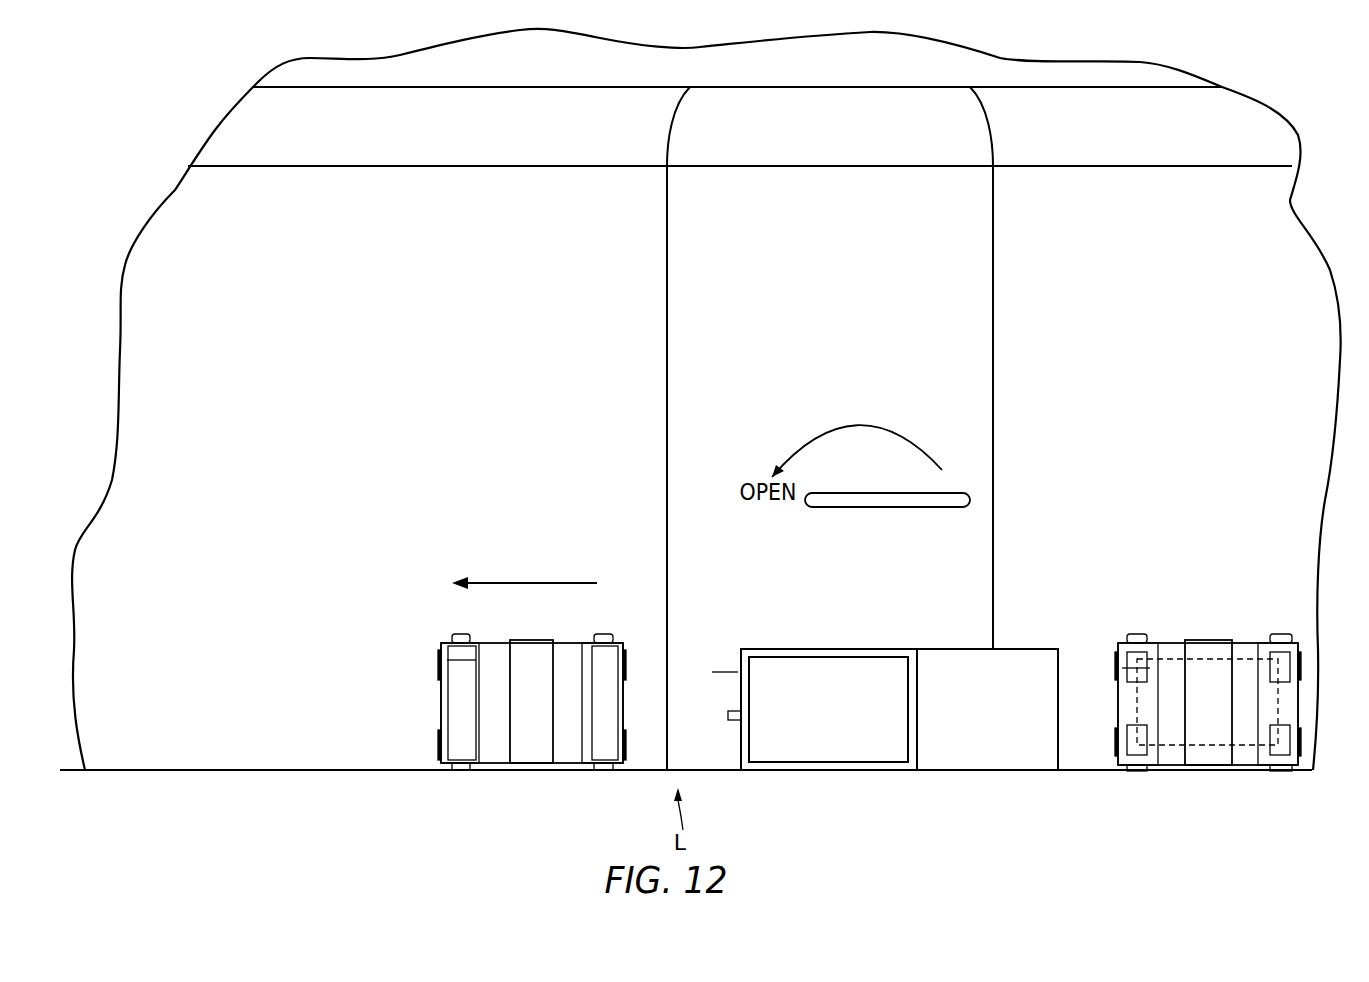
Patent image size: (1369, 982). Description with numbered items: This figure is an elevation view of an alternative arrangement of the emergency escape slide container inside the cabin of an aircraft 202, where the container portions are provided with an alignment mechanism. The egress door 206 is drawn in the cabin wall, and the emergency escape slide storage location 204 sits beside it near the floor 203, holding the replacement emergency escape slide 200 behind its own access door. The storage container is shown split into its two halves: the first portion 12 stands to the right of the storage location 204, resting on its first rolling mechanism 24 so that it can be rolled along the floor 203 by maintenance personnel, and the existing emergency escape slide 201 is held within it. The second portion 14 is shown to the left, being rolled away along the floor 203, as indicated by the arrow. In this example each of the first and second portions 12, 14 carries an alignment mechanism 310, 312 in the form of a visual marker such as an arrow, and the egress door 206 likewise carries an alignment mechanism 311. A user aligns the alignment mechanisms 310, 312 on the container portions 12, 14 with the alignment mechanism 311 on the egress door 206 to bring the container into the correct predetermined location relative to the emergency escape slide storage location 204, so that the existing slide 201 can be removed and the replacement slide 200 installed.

The aircraft 202 is at (258, 72).
The floor 203 is at (343, 760).
The second portion 14 is at (527, 755).
The alignment mechanism 310 is at (472, 660).
The emergency escape slide storage location 204 is at (897, 765).
The replacement emergency escape slide 200 is at (838, 748).
The alignment mechanism 311 is at (715, 672).
The egress door 206 is at (716, 758).
The first portion 12 is at (1170, 757).
The existing emergency escape slide 201 is at (1218, 717).
The first rolling mechanism 24 is at (1137, 790).
The alignment mechanism 312 is at (1150, 668).